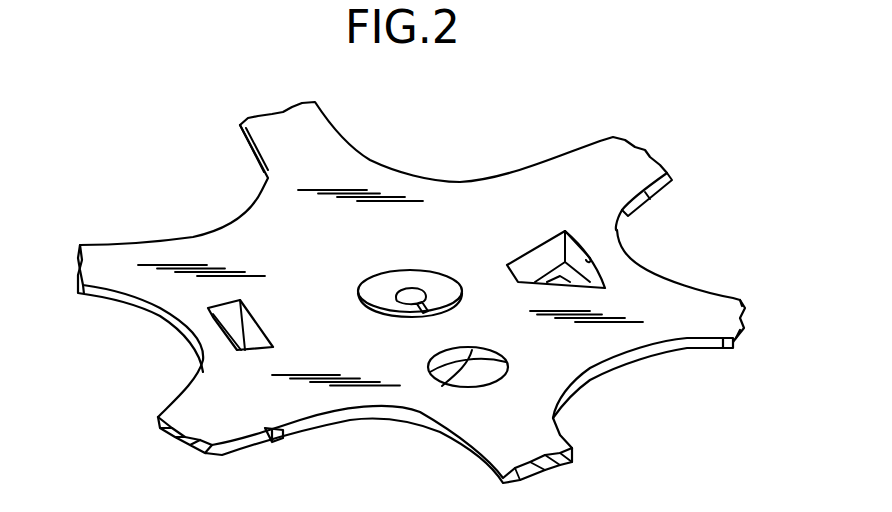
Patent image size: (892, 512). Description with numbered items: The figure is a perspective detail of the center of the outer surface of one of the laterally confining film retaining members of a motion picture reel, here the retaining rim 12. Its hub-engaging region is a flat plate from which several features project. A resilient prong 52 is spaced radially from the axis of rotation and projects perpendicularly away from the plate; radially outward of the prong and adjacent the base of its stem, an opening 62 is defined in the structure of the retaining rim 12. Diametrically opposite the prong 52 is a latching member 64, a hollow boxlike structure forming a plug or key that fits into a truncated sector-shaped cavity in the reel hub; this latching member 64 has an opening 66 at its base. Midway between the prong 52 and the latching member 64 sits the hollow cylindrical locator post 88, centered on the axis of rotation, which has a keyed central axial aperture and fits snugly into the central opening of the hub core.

The retaining rim 12 is at (480, 154).
The resilient prong 52 is at (288, 436).
The opening 62 is at (230, 333).
The latching member 64 is at (547, 262).
The opening 66 is at (590, 254).
The locator post 88 is at (395, 283).